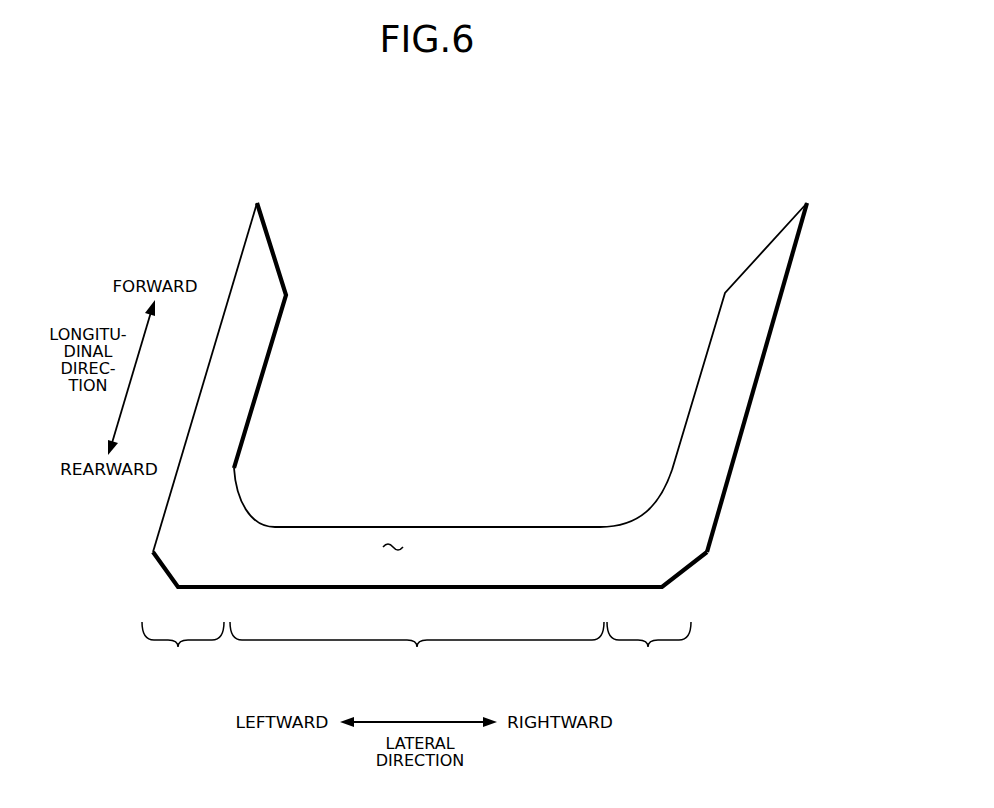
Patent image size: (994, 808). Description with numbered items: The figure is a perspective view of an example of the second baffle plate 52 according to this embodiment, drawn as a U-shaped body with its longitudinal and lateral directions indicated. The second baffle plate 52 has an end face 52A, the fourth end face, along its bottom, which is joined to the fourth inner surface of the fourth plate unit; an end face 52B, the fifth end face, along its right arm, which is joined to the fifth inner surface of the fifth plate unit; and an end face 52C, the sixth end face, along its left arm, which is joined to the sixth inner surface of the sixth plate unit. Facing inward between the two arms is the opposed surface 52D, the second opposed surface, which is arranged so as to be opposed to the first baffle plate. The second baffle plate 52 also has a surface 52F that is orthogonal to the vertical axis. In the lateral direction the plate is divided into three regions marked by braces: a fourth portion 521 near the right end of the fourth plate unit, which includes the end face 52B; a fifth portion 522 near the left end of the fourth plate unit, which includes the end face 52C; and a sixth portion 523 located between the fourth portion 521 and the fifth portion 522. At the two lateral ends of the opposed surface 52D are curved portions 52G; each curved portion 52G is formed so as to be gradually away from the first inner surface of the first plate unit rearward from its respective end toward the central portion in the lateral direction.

The second baffle plate 52 is at (777, 181).
The end face (fourth end face) 52A is at (477, 590).
The end face (fifth end face) 52B is at (742, 436).
The end face (sixth end face) 52C is at (198, 398).
The opposed surface (second opposed surface) 52D is at (487, 527).
The surface 52F is at (393, 540).
The curved portions 52G is at (248, 513).
The fourth portion 521 is at (649, 649).
The fifth portion 522 is at (183, 649).
The sixth portion 523 is at (417, 649).